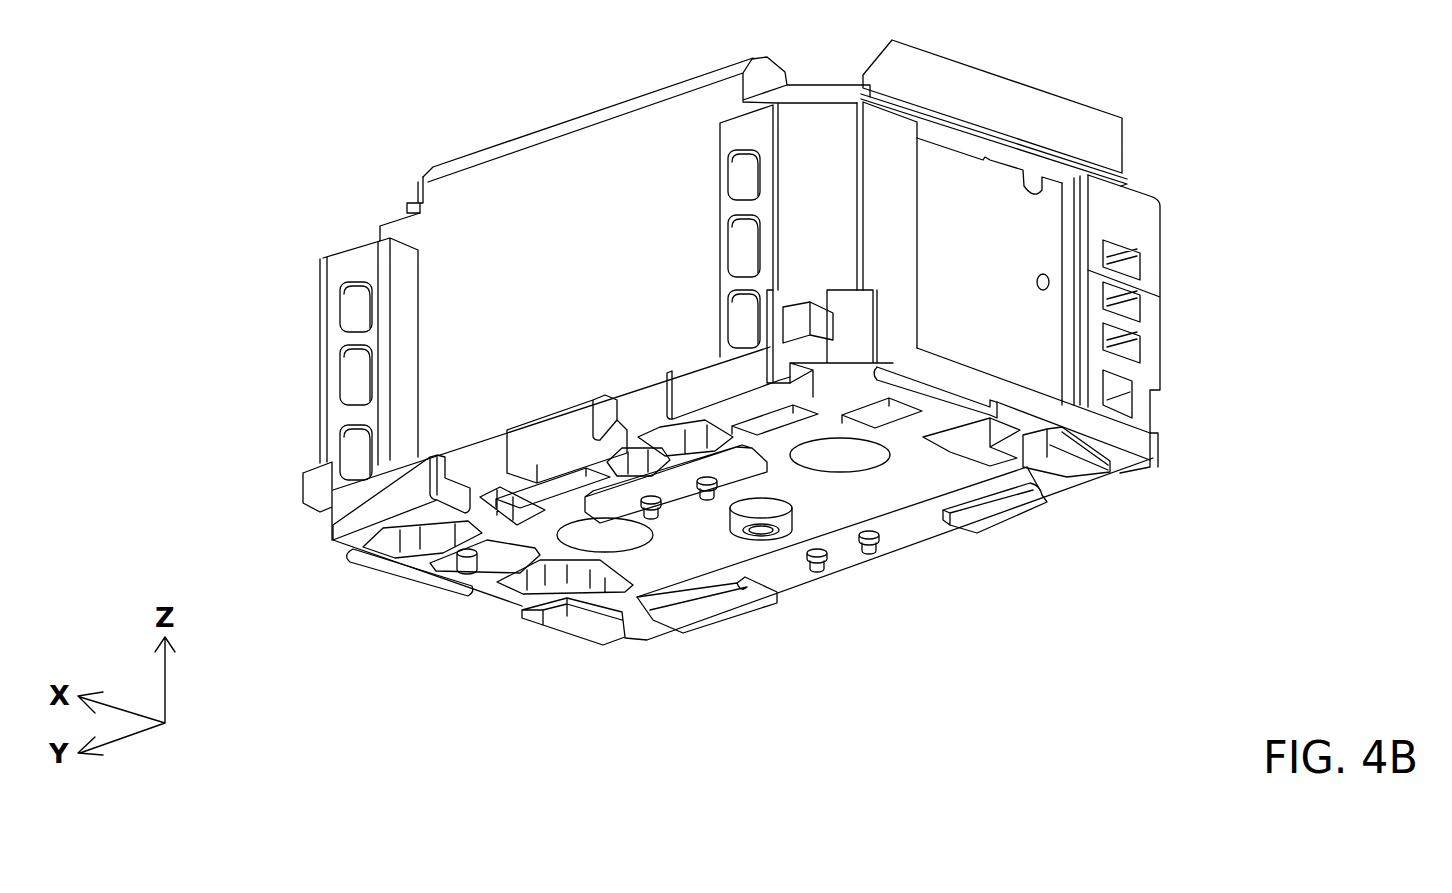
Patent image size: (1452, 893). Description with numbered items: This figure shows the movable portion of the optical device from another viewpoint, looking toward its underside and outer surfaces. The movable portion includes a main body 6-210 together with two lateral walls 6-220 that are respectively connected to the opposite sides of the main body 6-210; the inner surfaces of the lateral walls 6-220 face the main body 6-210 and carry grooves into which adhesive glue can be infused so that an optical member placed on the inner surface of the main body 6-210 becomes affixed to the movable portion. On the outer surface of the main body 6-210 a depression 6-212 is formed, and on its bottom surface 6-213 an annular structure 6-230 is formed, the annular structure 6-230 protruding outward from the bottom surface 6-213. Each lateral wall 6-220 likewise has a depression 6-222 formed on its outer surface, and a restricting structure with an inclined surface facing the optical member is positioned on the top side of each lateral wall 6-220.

The main body 6-210 is at (630, 105).
The depression 6-212 is at (553, 193).
The bottom surface 6-213 is at (905, 487).
The lateral wall 6-220 is at (1133, 220).
The depression 6-222 is at (1000, 313).
The annular structure 6-230 is at (767, 532).